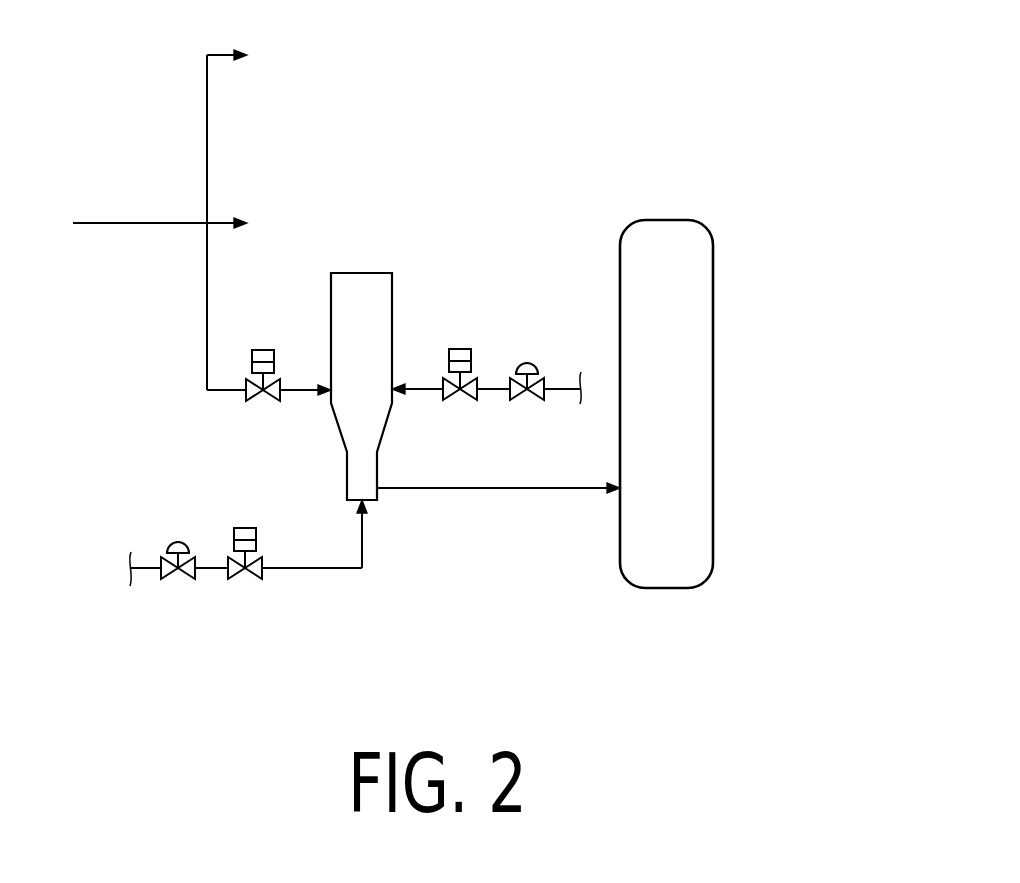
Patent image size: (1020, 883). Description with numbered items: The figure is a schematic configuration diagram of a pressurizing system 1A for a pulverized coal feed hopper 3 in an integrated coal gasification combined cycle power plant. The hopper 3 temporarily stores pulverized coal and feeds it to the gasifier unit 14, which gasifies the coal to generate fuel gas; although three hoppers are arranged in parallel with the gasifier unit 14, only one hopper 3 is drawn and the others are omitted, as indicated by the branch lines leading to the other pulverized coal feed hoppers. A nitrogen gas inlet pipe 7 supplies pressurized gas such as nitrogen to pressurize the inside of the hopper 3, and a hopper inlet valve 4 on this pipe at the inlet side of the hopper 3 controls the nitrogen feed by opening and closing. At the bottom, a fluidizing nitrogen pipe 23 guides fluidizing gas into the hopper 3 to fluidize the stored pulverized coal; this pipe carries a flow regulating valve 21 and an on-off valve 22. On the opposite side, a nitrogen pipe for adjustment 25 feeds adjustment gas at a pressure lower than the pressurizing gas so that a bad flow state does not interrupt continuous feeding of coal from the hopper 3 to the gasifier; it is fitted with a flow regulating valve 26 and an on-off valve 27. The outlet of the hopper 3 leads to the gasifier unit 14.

The pressurizing system 1A is at (658, 97).
The pulverized coal feed hopper 3 is at (378, 466).
The hopper inlet valve 4 is at (262, 350).
The nitrogen gas inlet pipe 7 is at (138, 222).
The gasifier unit 14 is at (714, 418).
The flow regulating valve 21 is at (178, 541).
The on-off valve 22 is at (246, 528).
The fluidizing nitrogen pipe 23 is at (312, 571).
The nitrogen pipe for adjustment 25 is at (425, 386).
The flow regulating valve 26 is at (527, 360).
The on-off valve 27 is at (459, 348).